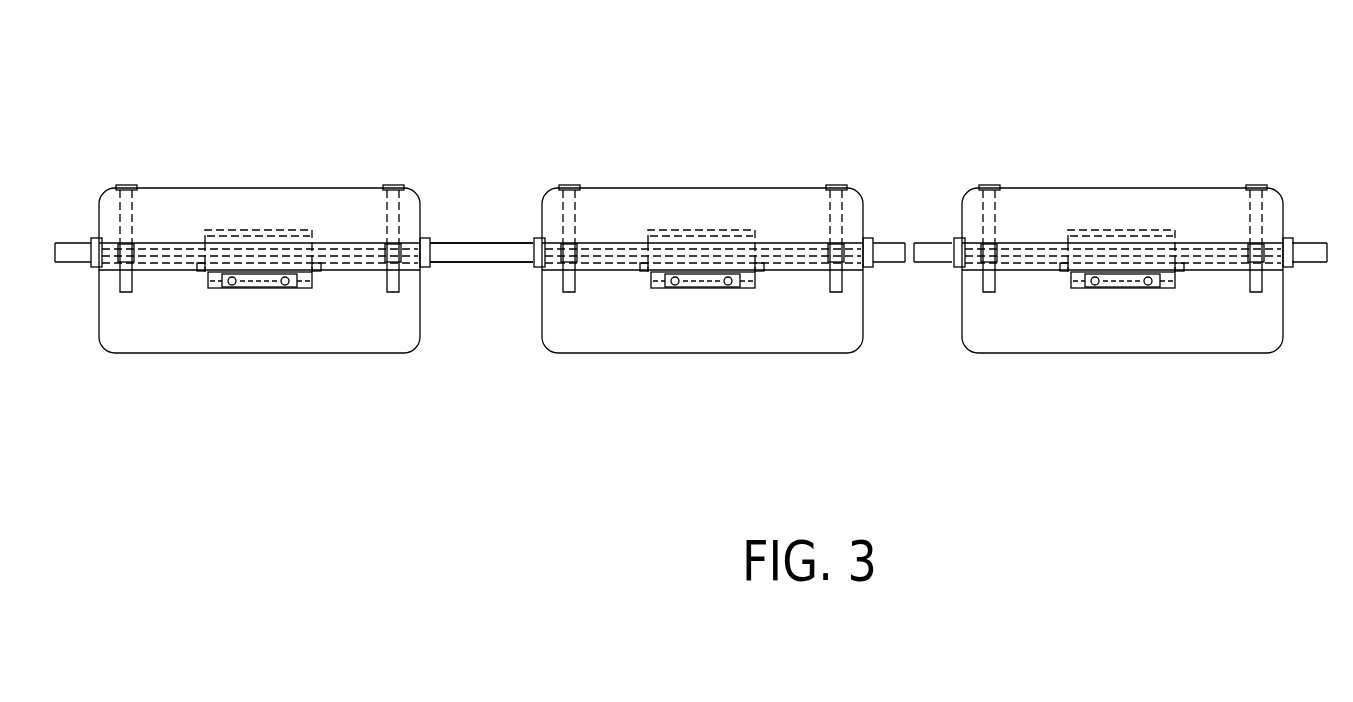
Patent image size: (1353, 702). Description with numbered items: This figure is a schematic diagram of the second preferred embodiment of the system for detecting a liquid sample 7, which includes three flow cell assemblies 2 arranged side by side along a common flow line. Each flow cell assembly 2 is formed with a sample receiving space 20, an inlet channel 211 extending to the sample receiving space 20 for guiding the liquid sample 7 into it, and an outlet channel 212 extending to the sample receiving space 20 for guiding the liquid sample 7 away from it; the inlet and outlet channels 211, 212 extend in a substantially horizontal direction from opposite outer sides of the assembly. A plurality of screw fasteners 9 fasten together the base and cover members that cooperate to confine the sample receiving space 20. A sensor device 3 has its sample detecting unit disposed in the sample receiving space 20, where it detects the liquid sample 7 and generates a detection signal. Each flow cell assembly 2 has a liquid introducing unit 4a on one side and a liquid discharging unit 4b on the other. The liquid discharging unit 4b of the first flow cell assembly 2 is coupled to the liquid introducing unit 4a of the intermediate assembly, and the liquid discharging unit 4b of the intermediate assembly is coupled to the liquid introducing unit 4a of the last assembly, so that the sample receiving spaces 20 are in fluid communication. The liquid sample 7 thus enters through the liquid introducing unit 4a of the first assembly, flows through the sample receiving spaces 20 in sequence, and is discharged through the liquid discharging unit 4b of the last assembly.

The flow cell assembly 2 is at (417, 197).
The sensor device 3 is at (252, 289).
The liquid introducing unit 4a is at (70, 240).
The liquid discharging unit 4b is at (455, 242).
The liquid sample 7 is at (335, 290).
The screw fasteners 9 is at (122, 185).
The sample receiving space 20 is at (200, 282).
The inlet channel 211 is at (167, 243).
The outlet channel 212 is at (345, 256).